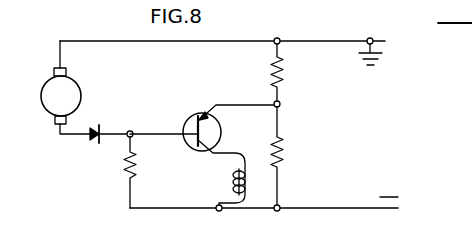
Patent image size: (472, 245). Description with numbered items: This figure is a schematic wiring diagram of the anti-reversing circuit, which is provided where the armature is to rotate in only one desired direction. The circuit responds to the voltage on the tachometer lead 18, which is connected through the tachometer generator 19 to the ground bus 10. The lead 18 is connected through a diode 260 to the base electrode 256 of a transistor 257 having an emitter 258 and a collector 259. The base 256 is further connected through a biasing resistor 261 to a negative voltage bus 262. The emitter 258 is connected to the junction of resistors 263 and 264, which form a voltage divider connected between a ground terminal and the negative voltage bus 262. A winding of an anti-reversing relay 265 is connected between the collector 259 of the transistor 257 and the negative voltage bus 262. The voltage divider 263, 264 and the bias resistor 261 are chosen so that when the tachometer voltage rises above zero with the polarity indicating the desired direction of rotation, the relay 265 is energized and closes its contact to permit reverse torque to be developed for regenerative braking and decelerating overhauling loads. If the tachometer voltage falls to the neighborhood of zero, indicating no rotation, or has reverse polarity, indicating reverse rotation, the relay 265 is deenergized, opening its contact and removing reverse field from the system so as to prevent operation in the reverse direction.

The ground bus 10 is at (303, 41).
The tachometer generator 19 is at (43, 83).
The tachometer lead 18 is at (78, 137).
The diode 260 is at (95, 127).
The biasing resistor 261 is at (123, 167).
The base electrode 256 is at (187, 141).
The transistor 257 is at (202, 98).
The emitter 258 is at (210, 111).
The collector 259 is at (214, 156).
The anti-reversing relay 265 is at (232, 182).
The resistor 263 is at (284, 72).
The resistor 264 is at (286, 150).
The negative voltage bus 262 is at (326, 208).